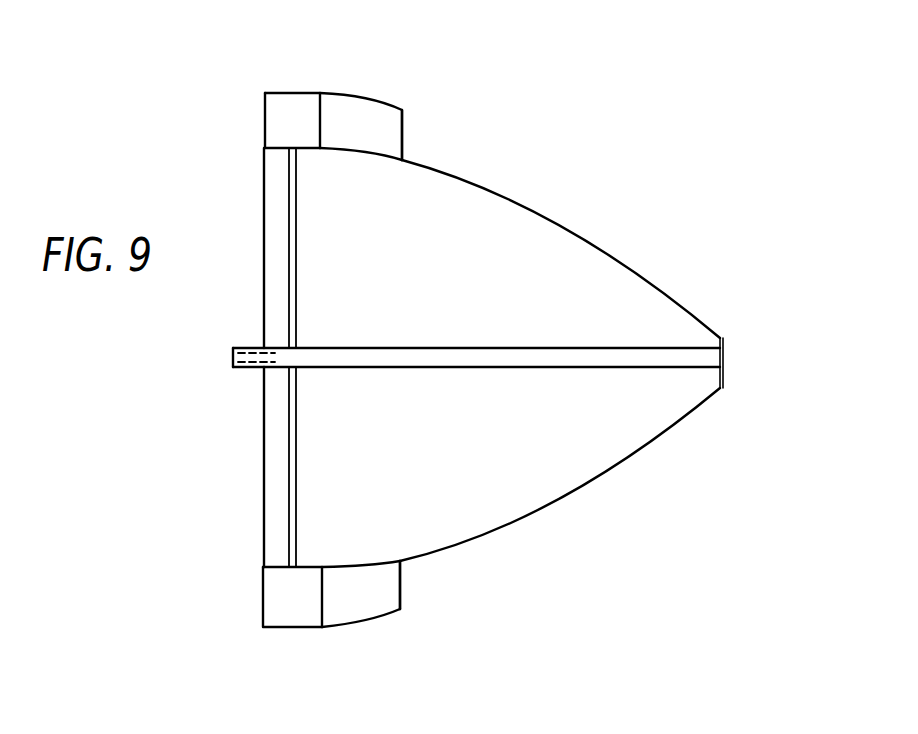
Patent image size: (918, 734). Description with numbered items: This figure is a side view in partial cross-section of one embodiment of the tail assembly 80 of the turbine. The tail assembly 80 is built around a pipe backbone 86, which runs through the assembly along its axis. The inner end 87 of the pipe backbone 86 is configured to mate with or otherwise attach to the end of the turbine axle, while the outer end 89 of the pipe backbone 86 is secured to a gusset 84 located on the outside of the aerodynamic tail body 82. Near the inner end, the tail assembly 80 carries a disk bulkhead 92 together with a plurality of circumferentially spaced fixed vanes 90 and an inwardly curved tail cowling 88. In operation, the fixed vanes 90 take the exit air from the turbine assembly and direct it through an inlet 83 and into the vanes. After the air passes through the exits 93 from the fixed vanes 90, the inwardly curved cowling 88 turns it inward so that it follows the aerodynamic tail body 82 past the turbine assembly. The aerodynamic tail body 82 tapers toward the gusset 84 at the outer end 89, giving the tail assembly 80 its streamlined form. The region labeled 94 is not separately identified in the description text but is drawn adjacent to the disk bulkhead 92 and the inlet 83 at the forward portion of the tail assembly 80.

The tail assembly 80 is at (617, 152).
The aerodynamic tail body 82 is at (582, 292).
The inlet 83 is at (250, 124).
The tail gusset 84 is at (723, 378).
The pipe backbone 86 is at (505, 360).
The inner end 87 is at (241, 368).
The tail cowling 88 is at (374, 102).
The outer end 89 is at (723, 357).
The fixed vanes 90 is at (292, 122).
The disk bulkhead 92 is at (289, 268).
The exits 93 is at (410, 137).
The side wall 94 is at (277, 150).